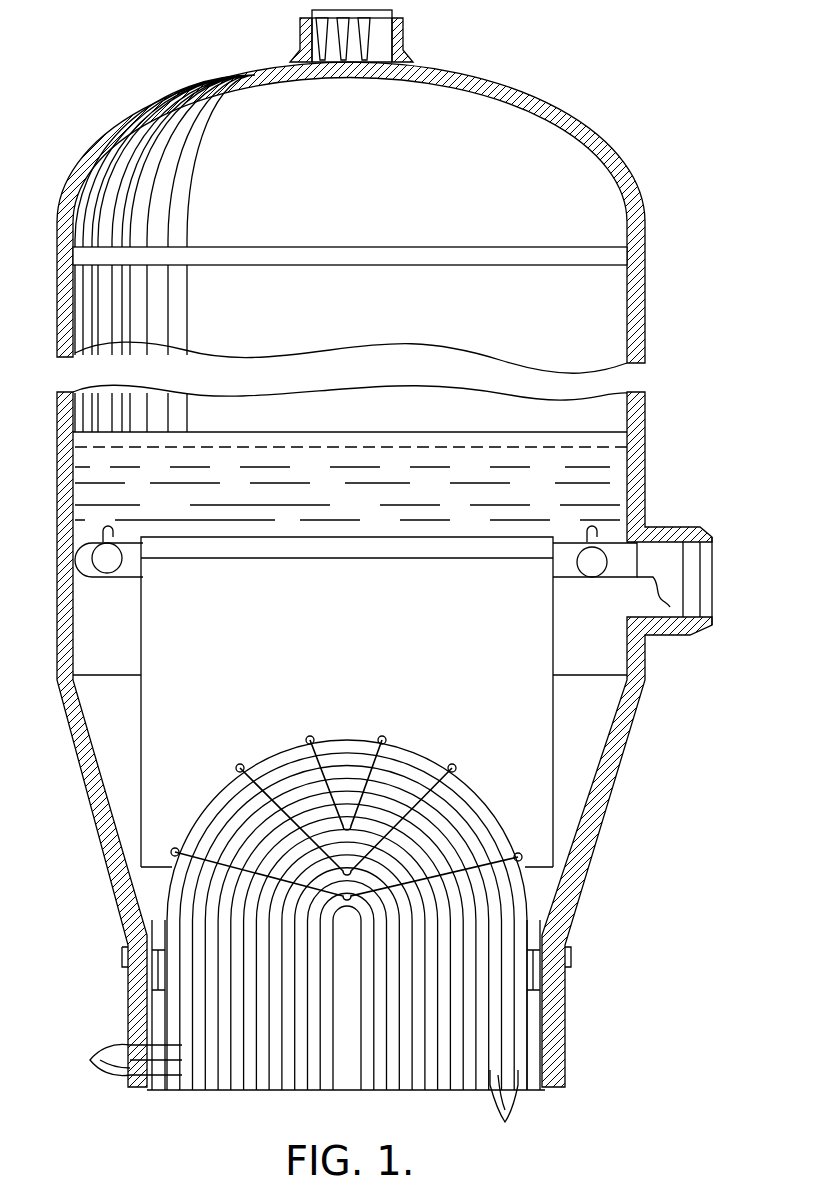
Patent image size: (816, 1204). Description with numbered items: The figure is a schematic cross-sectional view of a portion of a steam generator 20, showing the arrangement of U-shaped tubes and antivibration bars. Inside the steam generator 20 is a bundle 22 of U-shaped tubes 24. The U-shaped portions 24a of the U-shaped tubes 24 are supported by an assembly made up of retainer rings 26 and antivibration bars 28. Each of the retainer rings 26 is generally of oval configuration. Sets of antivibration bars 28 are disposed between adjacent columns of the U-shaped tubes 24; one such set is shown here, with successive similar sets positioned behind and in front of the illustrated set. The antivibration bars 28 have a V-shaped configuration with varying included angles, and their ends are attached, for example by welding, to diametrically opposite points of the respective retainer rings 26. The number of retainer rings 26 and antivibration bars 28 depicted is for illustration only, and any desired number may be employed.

The steam generator 20 is at (145, 88).
The bundle 22 is at (207, 1104).
The U-shaped tubes 24 is at (284, 1099).
The U-shaped portions 24a is at (215, 795).
The retainer rings 26 is at (311, 736).
The antivibration bars 28 is at (270, 797).